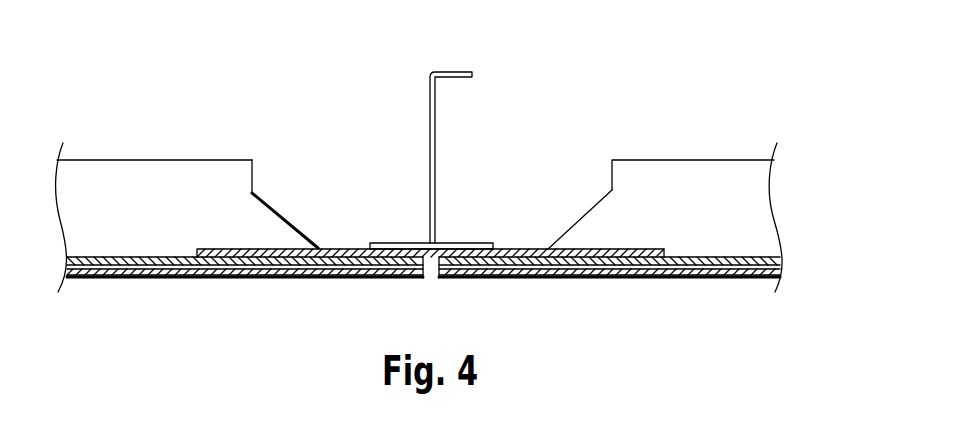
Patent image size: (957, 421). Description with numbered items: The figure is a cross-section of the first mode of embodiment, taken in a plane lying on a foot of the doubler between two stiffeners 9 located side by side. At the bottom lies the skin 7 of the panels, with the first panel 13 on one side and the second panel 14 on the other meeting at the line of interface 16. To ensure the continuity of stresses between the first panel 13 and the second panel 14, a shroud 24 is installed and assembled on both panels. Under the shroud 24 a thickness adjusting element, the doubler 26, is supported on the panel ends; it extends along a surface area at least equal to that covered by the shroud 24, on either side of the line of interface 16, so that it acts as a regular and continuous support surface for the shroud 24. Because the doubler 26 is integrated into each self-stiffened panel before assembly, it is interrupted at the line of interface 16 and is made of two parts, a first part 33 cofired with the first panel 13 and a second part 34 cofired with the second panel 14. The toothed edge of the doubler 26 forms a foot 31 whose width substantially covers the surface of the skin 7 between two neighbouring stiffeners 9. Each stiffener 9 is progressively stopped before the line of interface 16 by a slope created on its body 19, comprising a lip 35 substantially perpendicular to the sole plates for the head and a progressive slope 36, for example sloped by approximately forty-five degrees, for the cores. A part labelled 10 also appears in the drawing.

The skin 7 is at (103, 278).
The stiffener 9 is at (125, 190).
The contact pin 10 is at (433, 184).
The first panel 13 is at (298, 278).
The second panel 14 is at (517, 278).
The line of interface 16 is at (435, 290).
The body of stiffener 19 is at (203, 210).
The shroud 24 is at (638, 252).
The doubler 26 is at (218, 262).
The foot 31 is at (160, 262).
The first part of doubler 33 is at (345, 262).
The second part of doubler 34 is at (590, 262).
The lip 35 is at (613, 175).
The progressive slope 36 is at (581, 218).